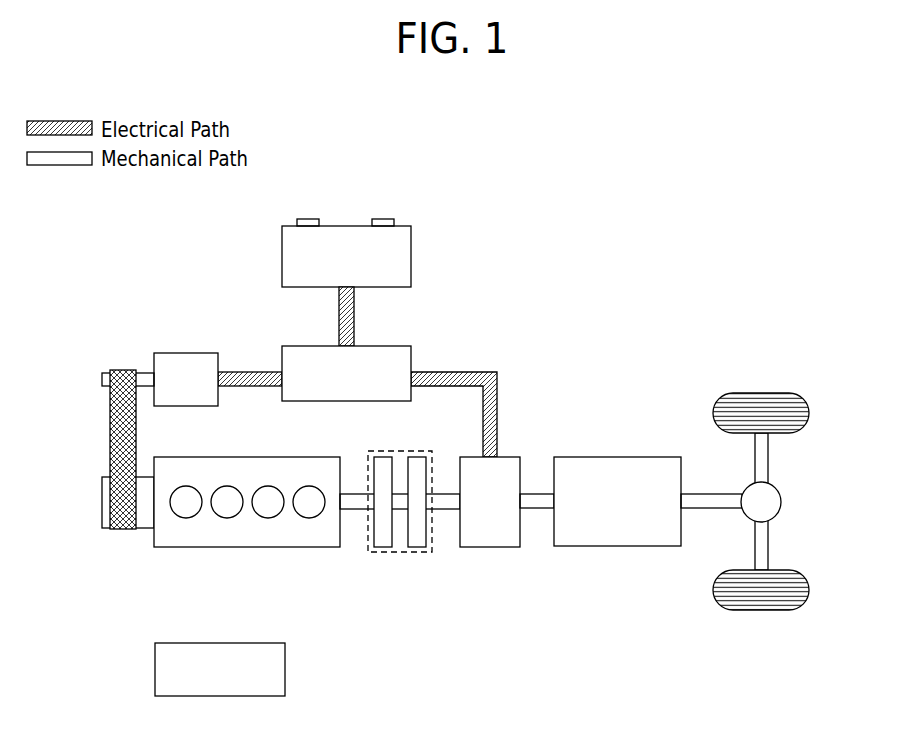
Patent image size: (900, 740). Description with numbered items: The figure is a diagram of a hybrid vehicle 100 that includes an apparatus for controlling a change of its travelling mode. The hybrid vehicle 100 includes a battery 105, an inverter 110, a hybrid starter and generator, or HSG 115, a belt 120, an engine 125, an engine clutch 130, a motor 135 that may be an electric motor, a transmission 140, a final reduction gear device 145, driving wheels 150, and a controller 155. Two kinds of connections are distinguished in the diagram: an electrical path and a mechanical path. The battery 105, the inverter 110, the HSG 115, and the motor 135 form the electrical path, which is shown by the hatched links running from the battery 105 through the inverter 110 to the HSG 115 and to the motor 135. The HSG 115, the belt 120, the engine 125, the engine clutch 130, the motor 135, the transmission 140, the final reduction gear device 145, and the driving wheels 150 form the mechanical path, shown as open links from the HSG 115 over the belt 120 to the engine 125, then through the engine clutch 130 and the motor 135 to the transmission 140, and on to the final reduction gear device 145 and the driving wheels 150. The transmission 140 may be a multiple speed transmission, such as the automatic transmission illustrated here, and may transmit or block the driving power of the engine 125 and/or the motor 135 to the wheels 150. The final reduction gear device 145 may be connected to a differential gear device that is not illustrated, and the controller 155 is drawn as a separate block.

The hybrid vehicle 100 is at (697, 183).
The battery 105 is at (281, 257).
The inverter 110 is at (405, 345).
The hybrid starter & generator (HSG) 115 is at (186, 353).
The belt 120 is at (110, 443).
The engine 125 is at (176, 548).
The engine clutch 130 is at (368, 530).
The motor 135 is at (490, 548).
The transmission 140 is at (617, 548).
The final reduction gear device 145 is at (782, 501).
The driving wheels 150 is at (810, 412).
The controller 155 is at (287, 670).